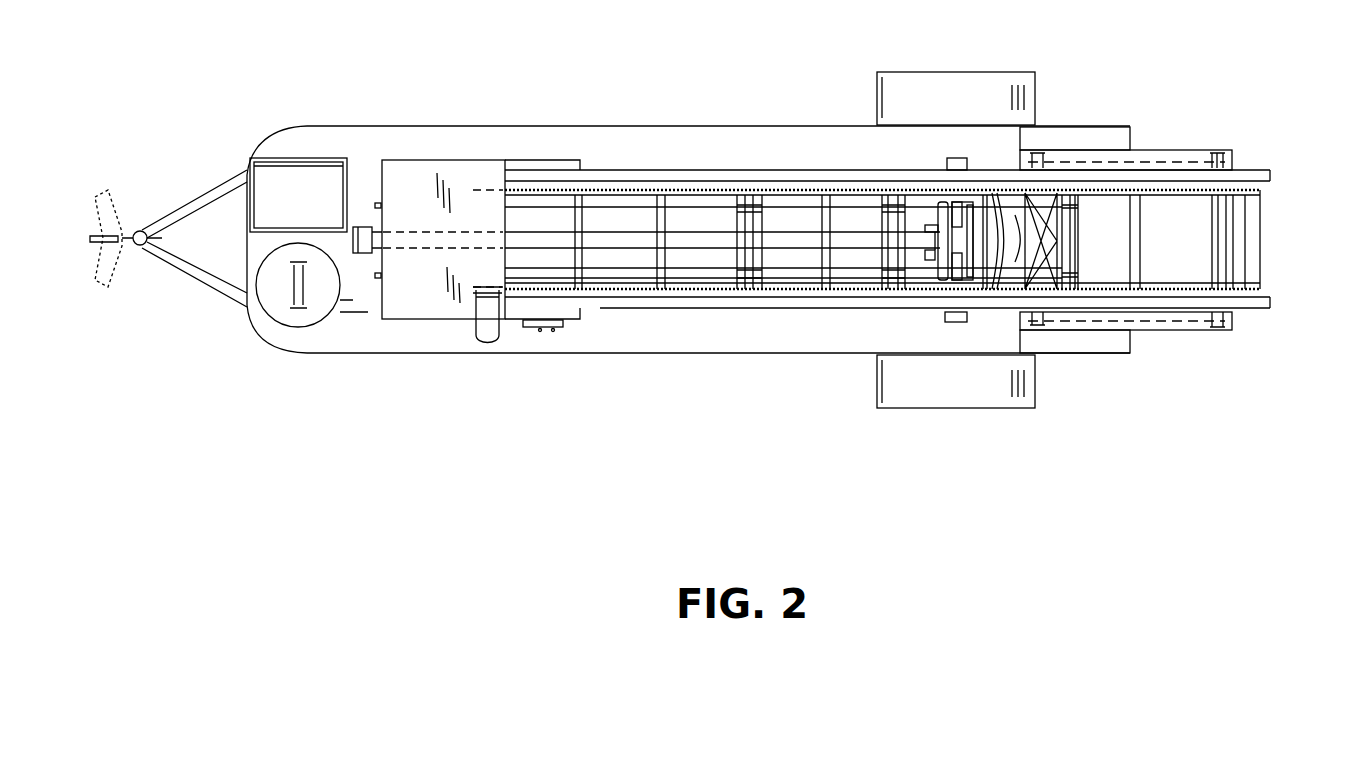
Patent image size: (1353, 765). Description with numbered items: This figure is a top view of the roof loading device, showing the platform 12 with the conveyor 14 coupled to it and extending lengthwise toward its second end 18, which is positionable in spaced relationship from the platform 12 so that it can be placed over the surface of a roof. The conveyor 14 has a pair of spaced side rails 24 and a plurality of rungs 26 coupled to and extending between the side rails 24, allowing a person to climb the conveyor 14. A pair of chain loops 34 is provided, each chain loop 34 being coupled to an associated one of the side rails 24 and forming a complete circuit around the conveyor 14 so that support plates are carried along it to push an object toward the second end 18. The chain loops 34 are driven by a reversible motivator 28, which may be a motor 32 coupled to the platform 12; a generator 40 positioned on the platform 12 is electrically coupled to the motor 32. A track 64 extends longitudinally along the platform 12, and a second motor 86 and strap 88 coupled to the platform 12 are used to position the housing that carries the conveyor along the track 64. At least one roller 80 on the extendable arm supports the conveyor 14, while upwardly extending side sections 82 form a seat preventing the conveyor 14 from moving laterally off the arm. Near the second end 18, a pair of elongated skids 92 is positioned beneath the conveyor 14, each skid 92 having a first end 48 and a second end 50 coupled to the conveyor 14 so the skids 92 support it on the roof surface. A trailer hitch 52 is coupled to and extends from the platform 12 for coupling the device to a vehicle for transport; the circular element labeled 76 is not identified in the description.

The platform 12 is at (690, 135).
The conveyor 14 is at (762, 166).
The second end 18 is at (1272, 176).
The side rails 24 is at (720, 178).
The rungs 26 is at (660, 210).
The reversible motivator 28 is at (462, 338).
The motor 32 is at (487, 340).
The chain loops 34 is at (620, 190).
The generator 40 is at (282, 172).
The first end 48 is at (1007, 170).
The second end 50 is at (1232, 158).
The trailer hitch 52 is at (190, 195).
The track 64 is at (795, 205).
The spare tire 76 is at (278, 308).
The roller 80 is at (960, 205).
The side sections 82 is at (955, 158).
The second motor 86 is at (930, 262).
The strap 88 is at (847, 245).
The skids 92 is at (1173, 157).